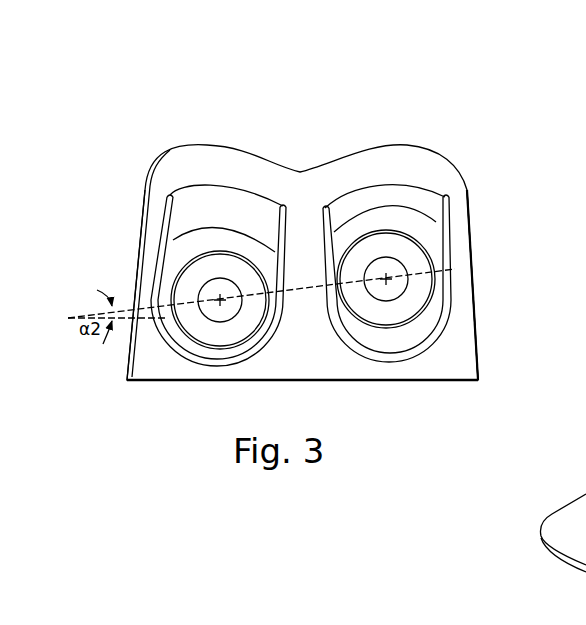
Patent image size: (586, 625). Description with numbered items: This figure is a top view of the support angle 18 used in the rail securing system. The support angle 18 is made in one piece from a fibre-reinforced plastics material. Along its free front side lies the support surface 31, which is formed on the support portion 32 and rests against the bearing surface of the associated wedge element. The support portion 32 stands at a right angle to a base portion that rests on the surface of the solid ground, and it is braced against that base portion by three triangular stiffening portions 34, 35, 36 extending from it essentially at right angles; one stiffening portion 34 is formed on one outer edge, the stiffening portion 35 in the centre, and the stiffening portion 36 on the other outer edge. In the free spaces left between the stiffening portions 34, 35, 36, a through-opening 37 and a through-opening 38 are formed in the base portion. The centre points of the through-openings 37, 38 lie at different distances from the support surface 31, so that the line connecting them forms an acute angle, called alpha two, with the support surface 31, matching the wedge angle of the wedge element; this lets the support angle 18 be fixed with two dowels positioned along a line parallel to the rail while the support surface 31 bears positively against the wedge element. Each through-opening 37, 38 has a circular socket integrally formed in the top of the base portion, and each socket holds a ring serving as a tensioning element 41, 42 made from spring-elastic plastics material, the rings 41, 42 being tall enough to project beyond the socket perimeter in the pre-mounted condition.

The support angle 18 is at (214, 117).
The support surface 31 is at (391, 384).
The support portion 32 is at (458, 366).
The stiffening portion 34 is at (148, 257).
The stiffening portion 35 is at (261, 293).
The stiffening portion 36 is at (460, 265).
The through-opening 37 is at (217, 312).
The through-opening 38 is at (388, 268).
The tensioning element 41 is at (374, 246).
The tensioning element 42 is at (214, 266).